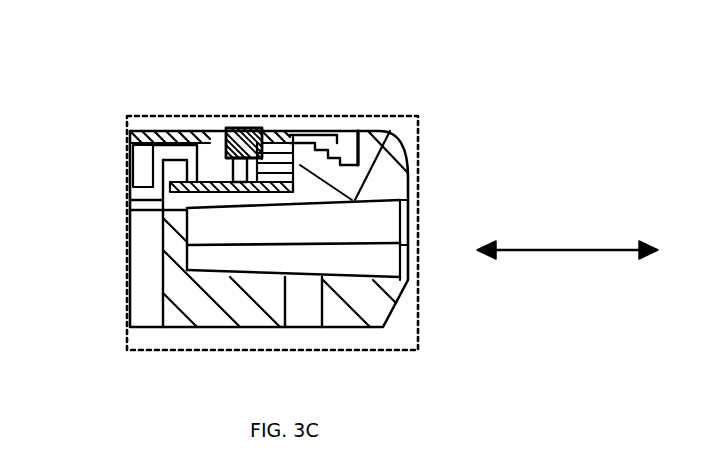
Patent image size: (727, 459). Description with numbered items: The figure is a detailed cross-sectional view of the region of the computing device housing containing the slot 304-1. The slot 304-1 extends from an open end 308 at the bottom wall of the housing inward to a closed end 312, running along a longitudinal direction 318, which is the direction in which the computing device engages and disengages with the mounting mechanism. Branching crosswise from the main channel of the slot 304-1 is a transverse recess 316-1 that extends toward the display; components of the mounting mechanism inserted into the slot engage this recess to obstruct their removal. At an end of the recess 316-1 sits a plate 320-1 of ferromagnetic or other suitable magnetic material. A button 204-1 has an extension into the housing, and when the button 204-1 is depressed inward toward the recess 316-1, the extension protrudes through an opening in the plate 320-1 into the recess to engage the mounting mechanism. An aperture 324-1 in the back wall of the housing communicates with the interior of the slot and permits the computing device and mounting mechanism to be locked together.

The button 204-1 is at (240, 130).
The plate 320-1 is at (197, 182).
The transverse recess 316-1 is at (232, 198).
The slot 304-1 is at (348, 213).
The open end 308 is at (407, 233).
The closed end 312 is at (187, 257).
The aperture 324-1 is at (303, 305).
The longitudinal direction 318 is at (567, 261).